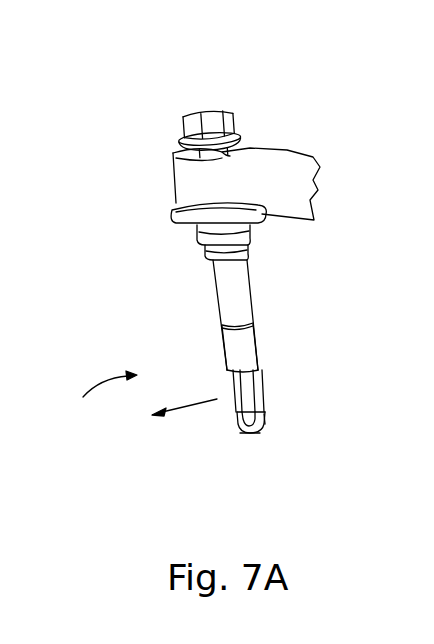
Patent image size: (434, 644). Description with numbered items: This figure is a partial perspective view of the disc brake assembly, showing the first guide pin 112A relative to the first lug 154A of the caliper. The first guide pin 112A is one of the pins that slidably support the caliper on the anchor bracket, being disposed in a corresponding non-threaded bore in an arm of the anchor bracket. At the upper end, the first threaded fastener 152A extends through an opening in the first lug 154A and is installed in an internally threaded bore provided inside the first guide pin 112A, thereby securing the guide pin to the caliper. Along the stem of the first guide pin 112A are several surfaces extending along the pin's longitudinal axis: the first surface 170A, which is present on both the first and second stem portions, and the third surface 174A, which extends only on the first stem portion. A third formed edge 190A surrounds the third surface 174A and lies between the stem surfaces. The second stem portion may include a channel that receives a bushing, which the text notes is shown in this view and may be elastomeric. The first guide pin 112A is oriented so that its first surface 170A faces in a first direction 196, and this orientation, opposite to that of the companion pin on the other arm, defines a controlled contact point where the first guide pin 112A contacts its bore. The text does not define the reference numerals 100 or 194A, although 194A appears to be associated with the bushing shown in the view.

The fastener assembly 100 is at (90, 401).
The first threaded fastener 152A is at (200, 113).
The first lug 154A is at (200, 180).
The first guide pin 112A is at (213, 293).
The lower shaft portion 194A is at (228, 350).
The first surface 170A is at (237, 416).
The third surface 174A is at (258, 433).
The third formed edge 190A is at (268, 424).
The first direction 196 is at (190, 407).